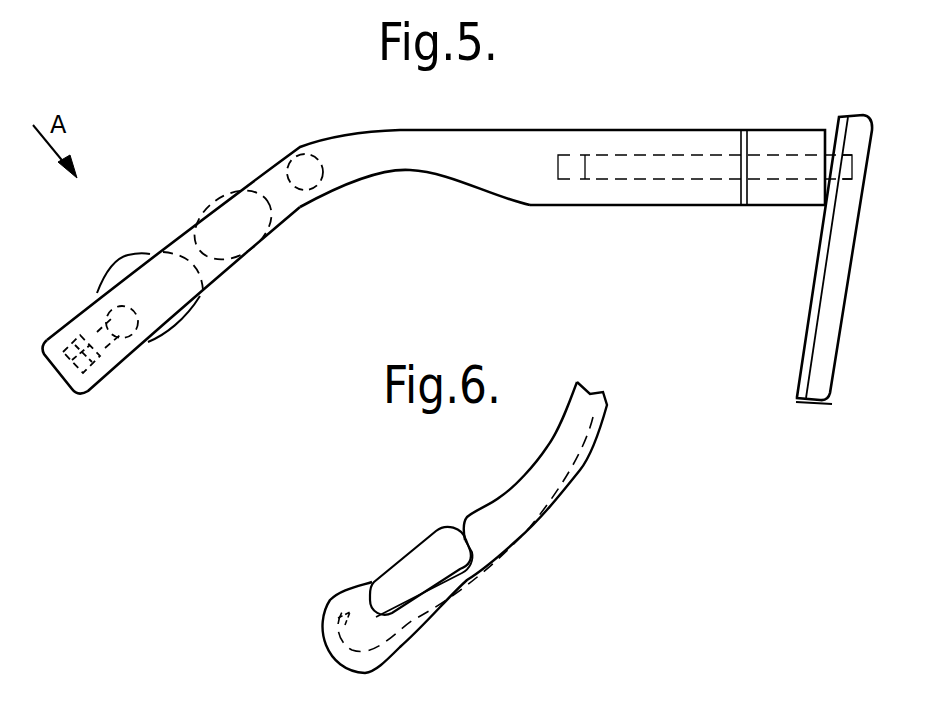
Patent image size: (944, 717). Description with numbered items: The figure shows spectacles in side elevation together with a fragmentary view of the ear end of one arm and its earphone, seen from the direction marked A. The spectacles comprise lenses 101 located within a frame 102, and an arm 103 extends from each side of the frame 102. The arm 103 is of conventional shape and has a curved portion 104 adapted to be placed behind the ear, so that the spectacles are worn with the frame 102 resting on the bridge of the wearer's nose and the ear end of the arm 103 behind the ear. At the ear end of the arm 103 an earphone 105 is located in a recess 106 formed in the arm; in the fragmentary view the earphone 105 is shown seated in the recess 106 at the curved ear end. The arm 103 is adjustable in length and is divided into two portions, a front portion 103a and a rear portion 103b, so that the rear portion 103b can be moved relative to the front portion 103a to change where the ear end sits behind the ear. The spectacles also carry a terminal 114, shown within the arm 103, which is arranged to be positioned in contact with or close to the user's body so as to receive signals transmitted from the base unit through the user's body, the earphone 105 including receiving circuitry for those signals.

In FIG. 5, the lenses 101 is at (862, 218).
In FIG. 5, the frame 102 is at (808, 405).
In FIG. 5, the arm 103 is at (500, 148).
In FIG. 5, the front portion 103a is at (778, 207).
In FIG. 5, the rear portion 103b is at (640, 207).
In FIG. 5, the curved portion 104 is at (362, 178).
In FIG. 5, the earphone 105 is at (130, 254).
In FIG. 6, the earphone 105 is at (430, 543).
In FIG. 6, the recess 106 is at (421, 612).
In FIG. 5, the terminal 114 is at (228, 198).